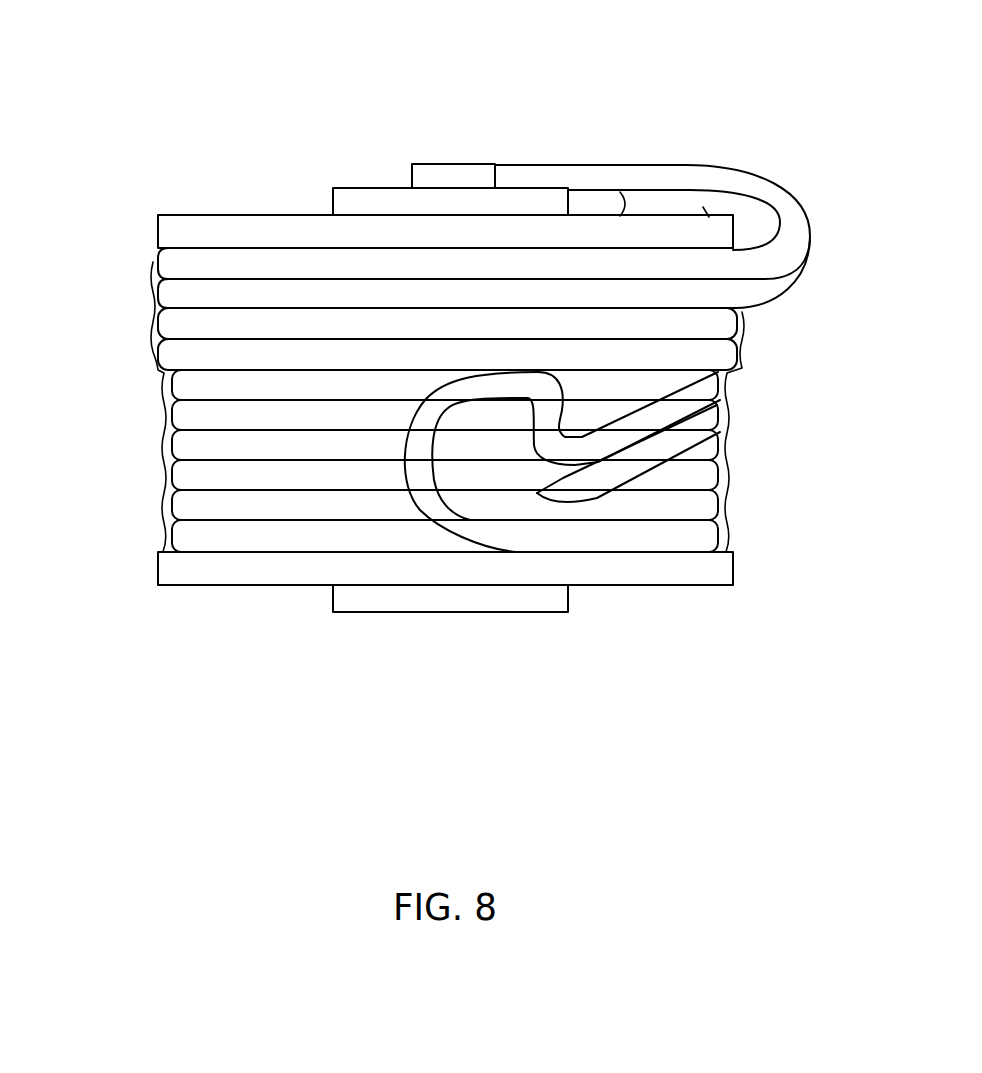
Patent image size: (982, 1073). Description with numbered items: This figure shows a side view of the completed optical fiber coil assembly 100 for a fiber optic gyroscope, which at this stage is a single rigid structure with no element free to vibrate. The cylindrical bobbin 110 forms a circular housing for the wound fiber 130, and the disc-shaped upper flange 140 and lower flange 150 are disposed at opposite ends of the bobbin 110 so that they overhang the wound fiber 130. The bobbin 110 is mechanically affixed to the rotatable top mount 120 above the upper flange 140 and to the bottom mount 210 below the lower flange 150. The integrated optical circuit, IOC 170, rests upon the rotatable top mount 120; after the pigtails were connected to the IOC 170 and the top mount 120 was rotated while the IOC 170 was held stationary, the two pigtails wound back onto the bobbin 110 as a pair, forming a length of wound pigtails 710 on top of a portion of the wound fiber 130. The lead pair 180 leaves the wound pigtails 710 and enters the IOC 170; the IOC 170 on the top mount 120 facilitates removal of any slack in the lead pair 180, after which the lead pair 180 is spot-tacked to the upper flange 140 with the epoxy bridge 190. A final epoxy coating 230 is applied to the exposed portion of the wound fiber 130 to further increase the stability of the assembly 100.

The optical fiber coil assembly 100 is at (605, 47).
The bobbin 110 is at (665, 577).
The rotatable top mount 120 is at (340, 188).
The wound fiber 130 is at (708, 512).
The upper flange 140 is at (167, 215).
The lower flange 150 is at (160, 585).
The integrated optical circuit (IOC) 170 is at (445, 163).
The lead pair 180 is at (637, 167).
The epoxy bridge 190 is at (665, 207).
The bottom mount 210 is at (362, 613).
The epoxy coating 230 is at (157, 372).
The wound pigtails 710 is at (143, 367).